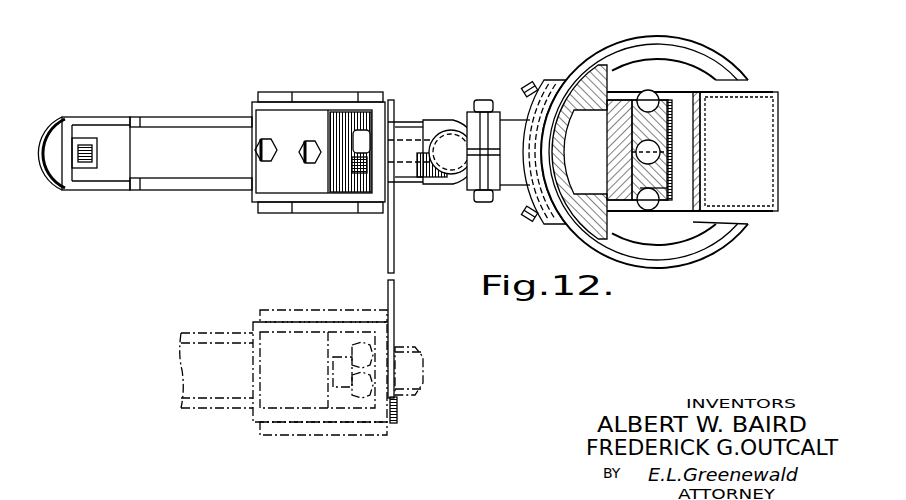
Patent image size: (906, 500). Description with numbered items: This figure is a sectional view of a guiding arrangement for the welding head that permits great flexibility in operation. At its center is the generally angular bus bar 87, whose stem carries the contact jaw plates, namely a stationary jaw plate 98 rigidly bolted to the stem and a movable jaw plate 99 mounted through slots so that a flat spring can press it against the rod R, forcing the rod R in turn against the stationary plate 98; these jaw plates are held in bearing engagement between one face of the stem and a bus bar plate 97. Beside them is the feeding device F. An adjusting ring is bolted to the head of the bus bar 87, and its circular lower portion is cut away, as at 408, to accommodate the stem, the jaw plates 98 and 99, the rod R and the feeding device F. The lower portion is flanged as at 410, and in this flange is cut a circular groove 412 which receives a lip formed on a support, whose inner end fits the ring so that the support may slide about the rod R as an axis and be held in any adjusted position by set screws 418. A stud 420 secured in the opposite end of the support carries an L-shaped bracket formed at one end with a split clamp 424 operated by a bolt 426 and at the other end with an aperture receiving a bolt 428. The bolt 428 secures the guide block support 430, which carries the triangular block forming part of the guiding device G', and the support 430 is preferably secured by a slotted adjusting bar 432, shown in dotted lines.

The guiding device G' is at (230, 262).
The guide block support 430 is at (318, 141).
The bolt 428 is at (350, 136).
The slotted adjusting bar 432 is at (397, 314).
The split clamp 424 is at (455, 178).
The stud 420 is at (446, 142).
The bolt 426 is at (483, 100).
The set screws 418 is at (530, 84).
The flange 410 is at (646, 27).
The cut-away 408 is at (700, 222).
The circular groove 412 is at (583, 63).
The bus bar 87 is at (612, 112).
The bus bar plate 97 is at (668, 137).
The rod R is at (655, 158).
The stationary jaw plate 98 is at (670, 188).
The movable jaw plate 99 is at (670, 108).
The feeding device F is at (768, 137).